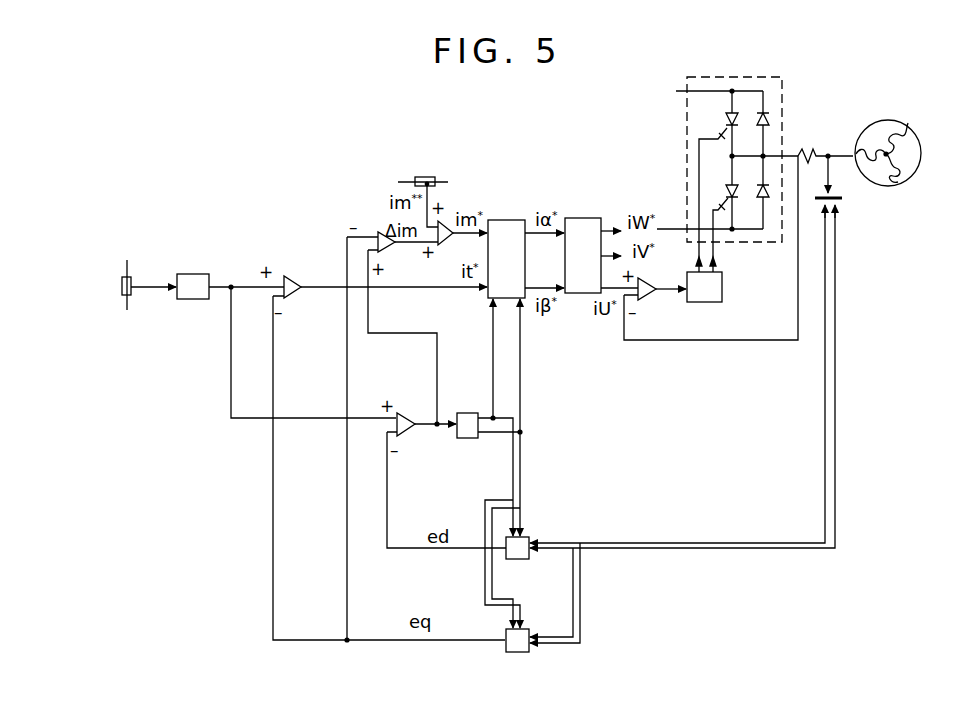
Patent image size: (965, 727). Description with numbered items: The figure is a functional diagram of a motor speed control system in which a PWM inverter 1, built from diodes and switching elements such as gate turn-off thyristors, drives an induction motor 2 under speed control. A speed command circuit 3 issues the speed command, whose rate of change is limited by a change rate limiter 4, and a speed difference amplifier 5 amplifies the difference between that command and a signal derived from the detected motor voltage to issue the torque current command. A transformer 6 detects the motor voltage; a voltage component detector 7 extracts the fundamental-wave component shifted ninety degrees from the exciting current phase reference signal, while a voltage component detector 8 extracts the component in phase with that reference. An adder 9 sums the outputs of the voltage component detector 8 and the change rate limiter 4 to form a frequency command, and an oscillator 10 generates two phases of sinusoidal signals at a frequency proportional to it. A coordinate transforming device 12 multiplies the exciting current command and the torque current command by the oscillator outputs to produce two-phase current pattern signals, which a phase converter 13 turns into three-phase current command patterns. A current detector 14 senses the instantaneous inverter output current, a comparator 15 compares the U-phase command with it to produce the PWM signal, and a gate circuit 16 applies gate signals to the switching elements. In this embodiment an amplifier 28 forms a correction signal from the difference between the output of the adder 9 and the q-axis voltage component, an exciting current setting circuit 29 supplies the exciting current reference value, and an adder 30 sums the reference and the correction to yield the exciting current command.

The PWM inverter 1 is at (783, 86).
The induction motor 2 is at (923, 142).
The speed command circuit 3 is at (121, 288).
The change rate limiter 4 is at (193, 274).
The speed difference amplifier 5 is at (291, 276).
The transformer 6 is at (840, 204).
The voltage component detector 7 is at (520, 653).
The voltage component detector 8 is at (531, 538).
The adder 9 is at (406, 413).
The oscillator 10 is at (466, 413).
The coordinate transforming device 12 is at (513, 220).
The phase converter 13 is at (590, 218).
The current detector 14 is at (808, 155).
The comparator 15 is at (651, 299).
The gate circuit 16 is at (722, 290).
The amplifier 28 is at (381, 232).
The exciting current setting circuit 29 is at (425, 177).
The adder 30 is at (450, 222).